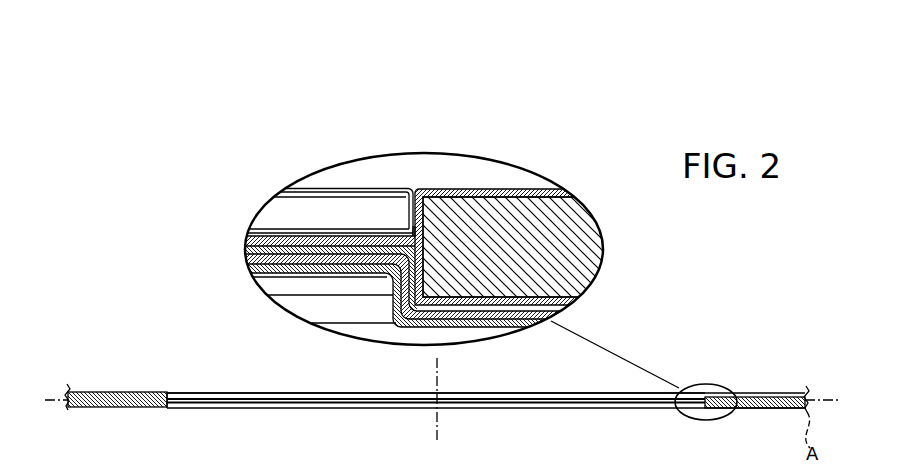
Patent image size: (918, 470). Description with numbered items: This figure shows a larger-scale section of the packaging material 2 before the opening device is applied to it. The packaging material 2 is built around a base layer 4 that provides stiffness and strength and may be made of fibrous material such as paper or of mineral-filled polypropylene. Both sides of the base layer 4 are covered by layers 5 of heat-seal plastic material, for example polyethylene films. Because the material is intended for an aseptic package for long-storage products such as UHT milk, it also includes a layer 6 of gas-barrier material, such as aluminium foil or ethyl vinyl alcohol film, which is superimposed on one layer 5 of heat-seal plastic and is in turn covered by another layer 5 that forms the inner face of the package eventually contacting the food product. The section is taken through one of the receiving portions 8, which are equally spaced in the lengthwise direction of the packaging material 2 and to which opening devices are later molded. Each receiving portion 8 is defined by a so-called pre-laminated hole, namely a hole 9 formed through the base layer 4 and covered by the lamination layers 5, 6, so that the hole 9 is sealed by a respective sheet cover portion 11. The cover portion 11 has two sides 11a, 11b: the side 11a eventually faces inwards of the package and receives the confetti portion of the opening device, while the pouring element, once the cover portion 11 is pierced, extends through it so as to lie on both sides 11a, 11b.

The packaging material 2 is at (139, 387).
The base layer 4 is at (560, 248).
The layers of heat-seal plastic material 5 is at (570, 192).
The layer of gas-barrier material 6 is at (247, 262).
The receiving portion 8 is at (333, 229).
The hole 9 is at (413, 216).
The sheet cover portion 11 is at (288, 245).
The side of cover portion 11a is at (470, 410).
The side of cover portion 11b is at (296, 390).